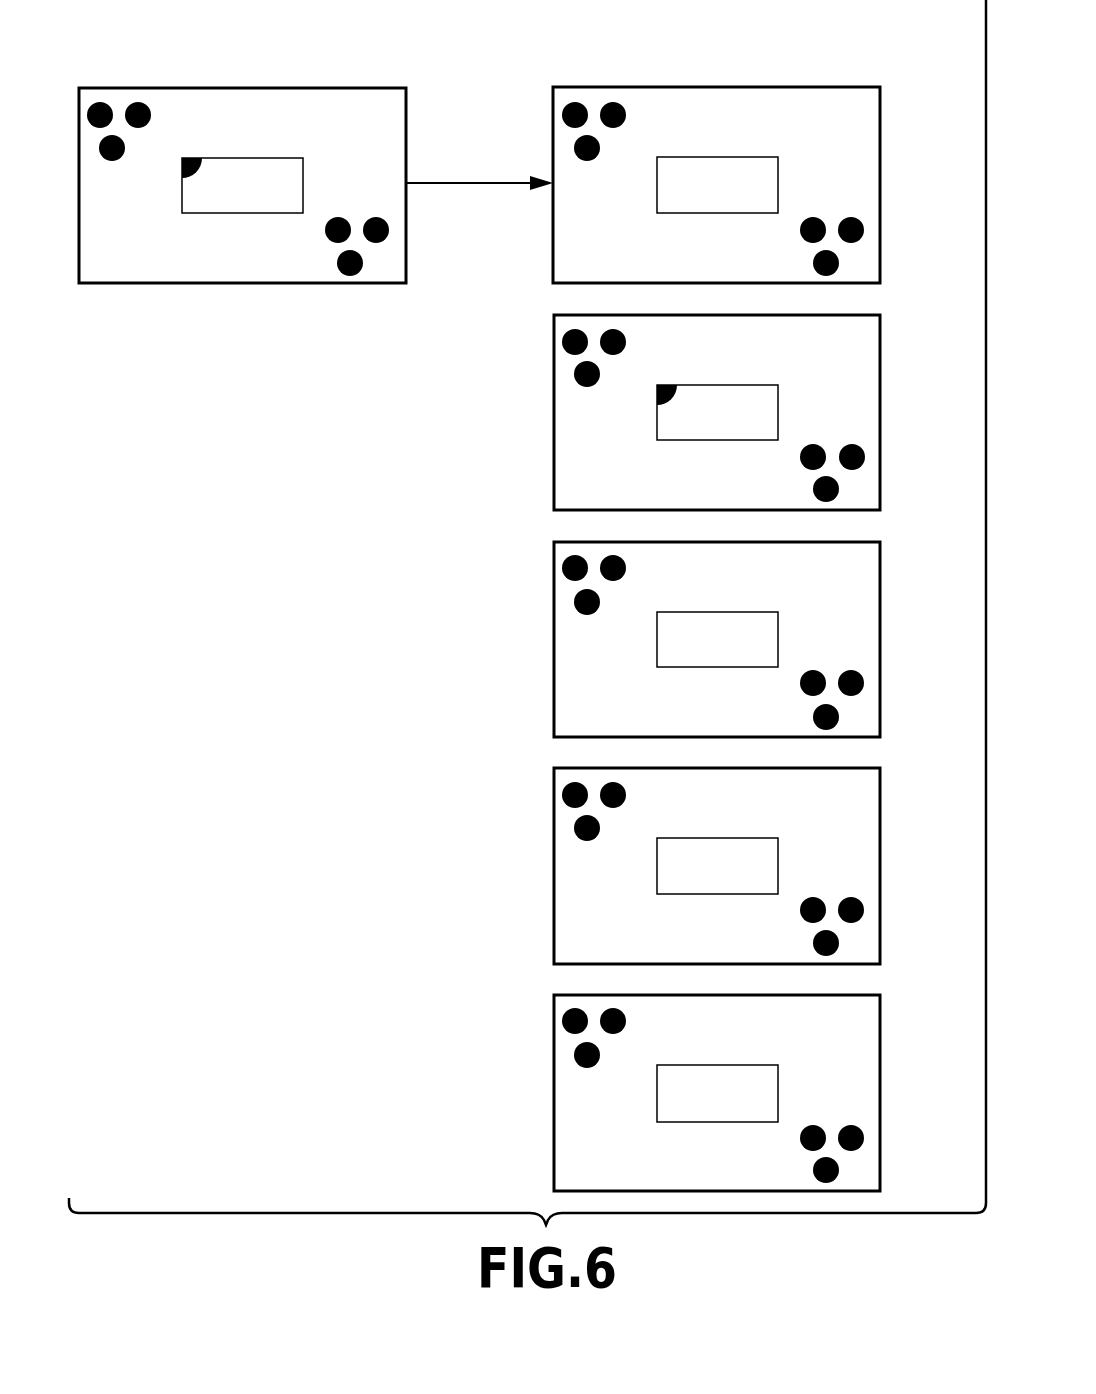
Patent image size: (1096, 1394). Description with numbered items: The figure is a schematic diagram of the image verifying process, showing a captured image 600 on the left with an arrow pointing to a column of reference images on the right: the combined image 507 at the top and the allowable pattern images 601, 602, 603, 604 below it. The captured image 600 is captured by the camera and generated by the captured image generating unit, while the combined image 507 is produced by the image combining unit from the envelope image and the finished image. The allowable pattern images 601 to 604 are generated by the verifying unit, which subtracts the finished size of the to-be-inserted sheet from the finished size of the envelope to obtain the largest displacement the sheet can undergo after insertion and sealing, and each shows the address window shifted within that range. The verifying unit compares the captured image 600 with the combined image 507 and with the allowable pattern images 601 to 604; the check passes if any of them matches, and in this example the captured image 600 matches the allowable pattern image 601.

The captured image 600 is at (288, 100).
The combined image 507 is at (872, 148).
The allowable pattern image 601 is at (872, 415).
The allowable pattern image 602 is at (872, 620).
The allowable pattern image 603 is at (872, 852).
The allowable pattern image 604 is at (872, 1067).